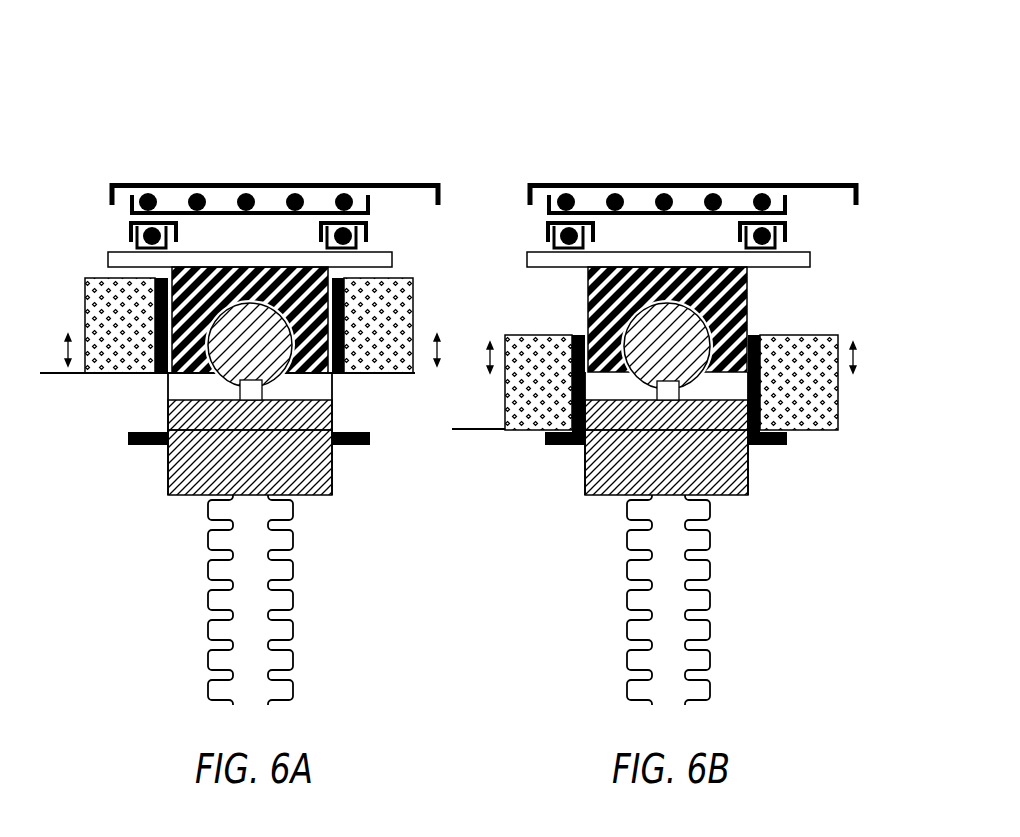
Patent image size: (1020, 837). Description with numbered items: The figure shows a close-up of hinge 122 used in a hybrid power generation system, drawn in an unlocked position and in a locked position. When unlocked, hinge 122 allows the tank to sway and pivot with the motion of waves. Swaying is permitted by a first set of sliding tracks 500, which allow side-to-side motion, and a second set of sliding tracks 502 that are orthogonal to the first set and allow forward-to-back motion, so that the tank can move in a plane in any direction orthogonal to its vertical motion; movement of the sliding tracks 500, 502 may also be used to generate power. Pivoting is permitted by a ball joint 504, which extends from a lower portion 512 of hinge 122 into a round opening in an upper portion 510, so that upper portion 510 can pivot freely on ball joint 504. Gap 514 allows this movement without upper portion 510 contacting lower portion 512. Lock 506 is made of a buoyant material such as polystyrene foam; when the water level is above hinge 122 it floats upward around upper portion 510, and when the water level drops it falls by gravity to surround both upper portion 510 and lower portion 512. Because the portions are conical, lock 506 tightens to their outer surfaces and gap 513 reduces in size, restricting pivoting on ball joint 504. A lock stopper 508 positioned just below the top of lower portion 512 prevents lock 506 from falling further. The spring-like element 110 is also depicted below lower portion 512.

In FIG. 6B, the hinge 122 is at (797, 63).
In FIG. 6A, the first set of sliding tracks 500 is at (110, 193).
In FIG. 6B, the first set of sliding tracks 500 is at (762, 200).
In FIG. 6A, the second set of sliding tracks 502 is at (148, 233).
In FIG. 6B, the second set of sliding tracks 502 is at (787, 243).
In FIG. 6A, the ball joint 504 is at (222, 352).
In FIG. 6B, the ball joint 504 is at (747, 312).
In FIG. 6A, the lock 506 is at (110, 297).
In FIG. 6B, the lock 506 is at (820, 383).
In FIG. 6A, the lock stopper 508 is at (128, 438).
In FIG. 6B, the lock stopper 508 is at (770, 447).
In FIG. 6A, the upper portion 510 is at (200, 282).
In FIG. 6B, the upper portion 510 is at (748, 292).
In FIG. 6A, the lower portion 512 is at (175, 483).
In FIG. 6B, the lower portion 512 is at (752, 492).
In FIG. 6A, the gap 513 is at (166, 376).
In FIG. 6B, the gap 513 is at (587, 335).
In FIG. 6A, the gap 514 is at (180, 394).
In FIG. 6B, the gap 514 is at (605, 390).
In FIG. 6A, the spring 110 is at (210, 632).
In FIG. 6B, the spring 110 is at (710, 598).